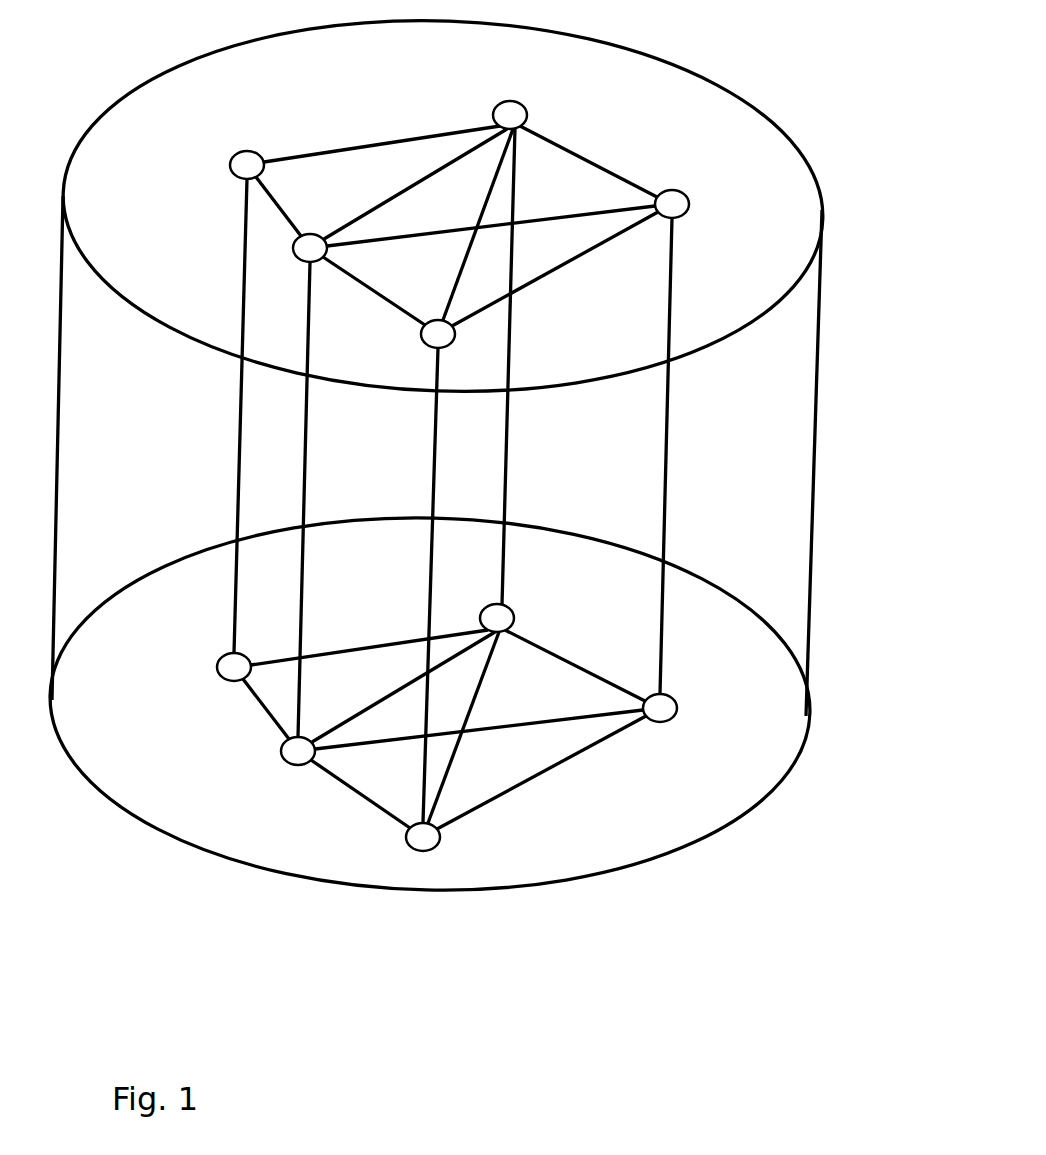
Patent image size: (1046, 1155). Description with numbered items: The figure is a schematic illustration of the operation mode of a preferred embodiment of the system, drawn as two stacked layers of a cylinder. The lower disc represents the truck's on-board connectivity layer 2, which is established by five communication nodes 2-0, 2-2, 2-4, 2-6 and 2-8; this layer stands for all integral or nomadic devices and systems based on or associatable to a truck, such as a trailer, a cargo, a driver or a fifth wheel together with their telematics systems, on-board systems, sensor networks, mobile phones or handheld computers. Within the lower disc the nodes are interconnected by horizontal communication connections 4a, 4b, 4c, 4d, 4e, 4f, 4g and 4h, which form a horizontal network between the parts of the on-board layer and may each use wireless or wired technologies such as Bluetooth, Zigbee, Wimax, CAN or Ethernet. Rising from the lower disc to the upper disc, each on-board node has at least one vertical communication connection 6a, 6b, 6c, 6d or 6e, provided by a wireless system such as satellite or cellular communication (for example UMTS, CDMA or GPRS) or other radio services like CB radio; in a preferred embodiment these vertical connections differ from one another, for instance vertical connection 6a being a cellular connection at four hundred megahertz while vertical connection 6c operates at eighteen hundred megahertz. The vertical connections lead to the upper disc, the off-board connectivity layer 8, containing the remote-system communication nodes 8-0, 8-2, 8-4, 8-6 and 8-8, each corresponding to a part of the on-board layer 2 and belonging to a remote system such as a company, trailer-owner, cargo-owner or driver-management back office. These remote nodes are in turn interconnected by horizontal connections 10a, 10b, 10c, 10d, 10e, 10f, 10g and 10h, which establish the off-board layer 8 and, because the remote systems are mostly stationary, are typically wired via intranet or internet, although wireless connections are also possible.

The on-board connectivity layer 2 is at (731, 669).
The off-board connectivity layer 8 is at (668, 94).
The communication node 2-0 is at (282, 752).
The communication node 2-2 is at (434, 854).
The communication node 2-4 is at (670, 723).
The communication node 2-6 is at (505, 613).
The communication node 2-8 is at (217, 665).
The remote system communication node 8-0 is at (298, 252).
The remote system communication node 8-2 is at (455, 337).
The remote system communication node 8-4 is at (680, 201).
The remote system communication node 8-6 is at (498, 108).
The remote system communication node 8-8 is at (240, 155).
The horizontal communication connection 4a is at (360, 796).
The horizontal communication connection 4b is at (541, 772).
The horizontal communication connection 4c is at (575, 665).
The horizontal communication connection 4d is at (369, 636).
The horizontal communication connection 4e is at (260, 709).
The horizontal communication connection 4f is at (403, 687).
The horizontal communication connection 4g is at (463, 727).
The horizontal communication connection 4h is at (479, 730).
The horizontal connection 10a is at (374, 301).
The horizontal connection 10b is at (555, 269).
The horizontal connection 10c is at (588, 161).
The horizontal connection 10d is at (382, 133).
The horizontal connection 10e is at (294, 206).
The horizontal connection 10f is at (415, 184).
The horizontal connection 10g is at (491, 221).
The horizontal connection 10h is at (465, 224).
The vertical communication connection 6a is at (321, 499).
The vertical communication connection 6b is at (414, 585).
The vertical communication connection 6c is at (685, 456).
The vertical communication connection 6d is at (526, 366).
The vertical communication connection 6e is at (223, 416).